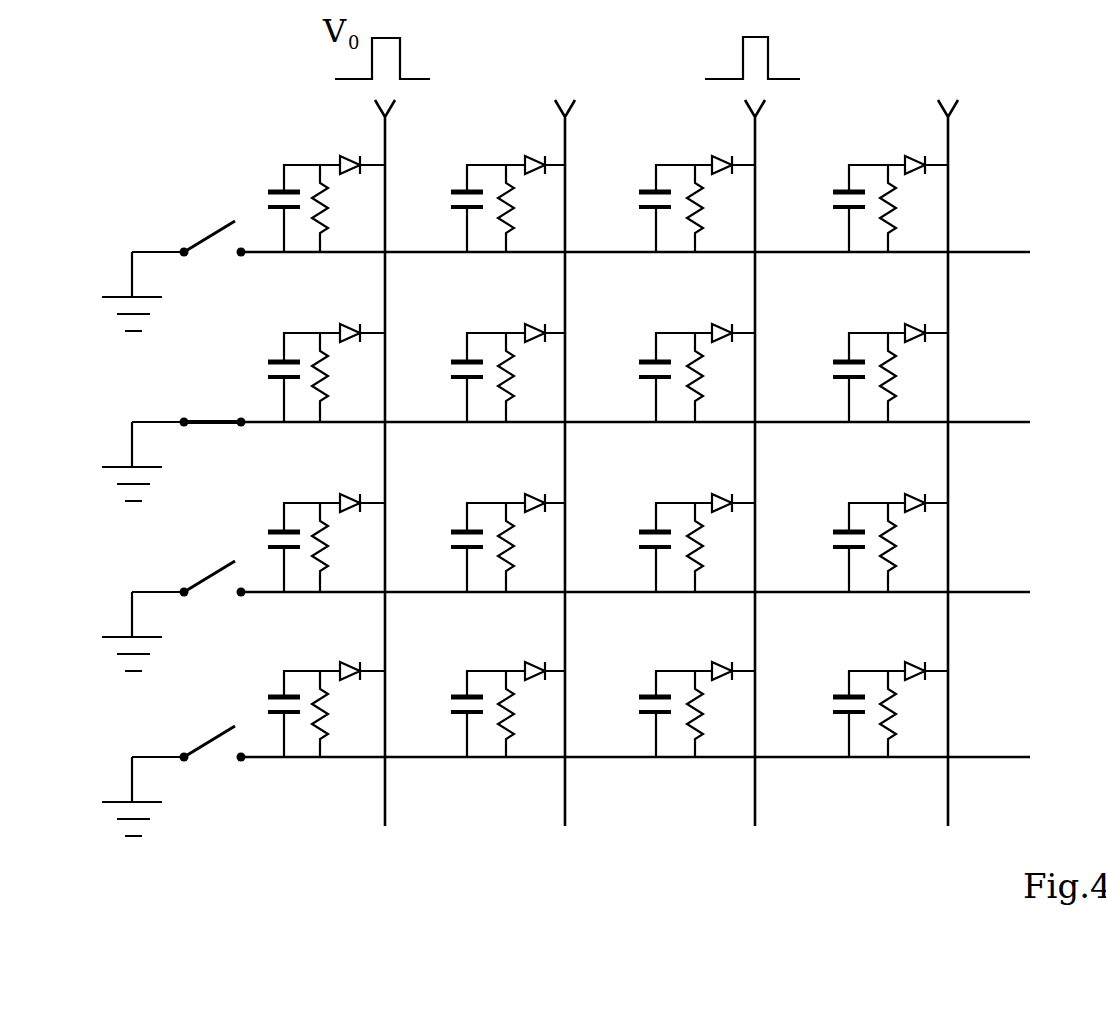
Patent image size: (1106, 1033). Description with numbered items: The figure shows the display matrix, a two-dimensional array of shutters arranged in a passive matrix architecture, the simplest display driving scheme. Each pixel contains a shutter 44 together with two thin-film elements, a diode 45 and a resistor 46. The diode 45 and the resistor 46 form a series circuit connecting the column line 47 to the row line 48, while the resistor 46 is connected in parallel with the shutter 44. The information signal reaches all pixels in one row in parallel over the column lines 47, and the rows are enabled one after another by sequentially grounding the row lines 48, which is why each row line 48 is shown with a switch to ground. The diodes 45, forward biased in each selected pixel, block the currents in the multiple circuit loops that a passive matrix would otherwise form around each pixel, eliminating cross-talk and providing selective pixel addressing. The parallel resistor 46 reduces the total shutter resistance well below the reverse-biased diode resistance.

The shutter 44 is at (277, 192).
The diode 45 is at (342, 330).
The resistor 46 is at (322, 535).
The column line 47 is at (387, 142).
The row line 48 is at (157, 253).